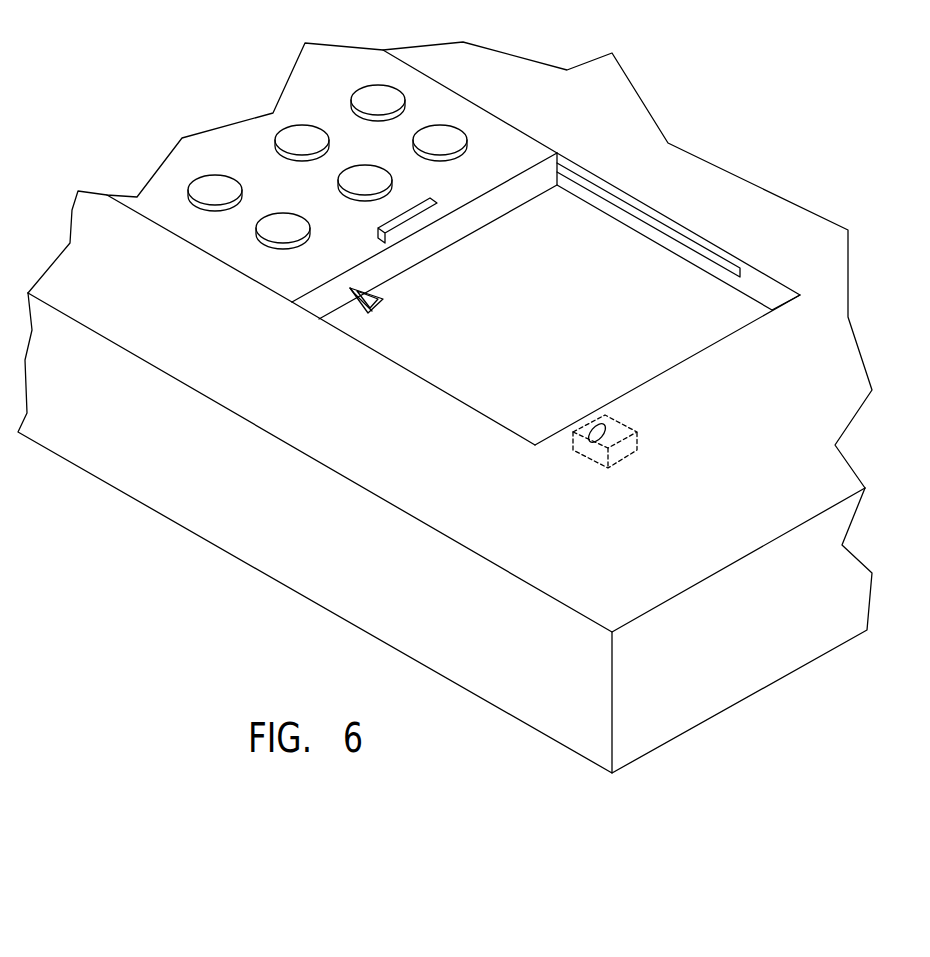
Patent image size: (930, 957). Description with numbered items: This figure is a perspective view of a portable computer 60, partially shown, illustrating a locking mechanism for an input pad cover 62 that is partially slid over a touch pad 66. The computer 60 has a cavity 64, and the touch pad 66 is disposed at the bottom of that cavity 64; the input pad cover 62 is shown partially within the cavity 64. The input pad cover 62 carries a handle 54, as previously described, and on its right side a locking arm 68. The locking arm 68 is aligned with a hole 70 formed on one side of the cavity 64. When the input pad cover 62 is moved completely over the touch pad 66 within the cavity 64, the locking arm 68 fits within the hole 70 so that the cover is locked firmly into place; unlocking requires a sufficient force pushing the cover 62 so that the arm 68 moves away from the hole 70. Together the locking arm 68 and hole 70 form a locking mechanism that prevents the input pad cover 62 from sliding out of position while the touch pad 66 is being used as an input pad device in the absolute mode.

The handle 54 is at (433, 202).
The computer 60 is at (187, 362).
The input pad cover 62 is at (520, 145).
The cavity 64 is at (688, 337).
The touch pad 66 is at (493, 400).
The locking arm 68 is at (386, 299).
The hole 70 is at (625, 423).